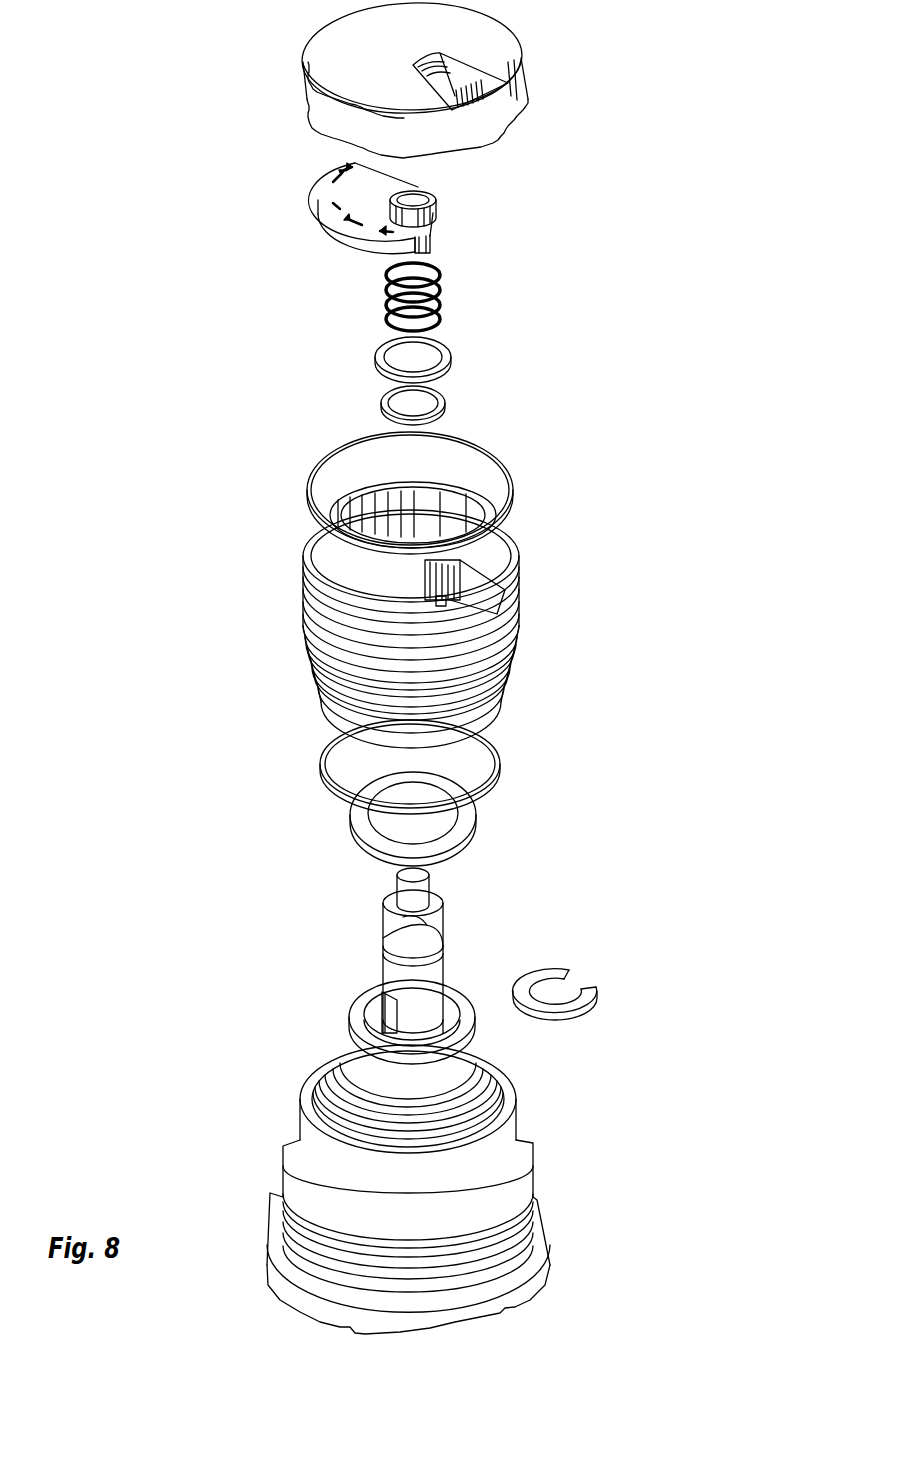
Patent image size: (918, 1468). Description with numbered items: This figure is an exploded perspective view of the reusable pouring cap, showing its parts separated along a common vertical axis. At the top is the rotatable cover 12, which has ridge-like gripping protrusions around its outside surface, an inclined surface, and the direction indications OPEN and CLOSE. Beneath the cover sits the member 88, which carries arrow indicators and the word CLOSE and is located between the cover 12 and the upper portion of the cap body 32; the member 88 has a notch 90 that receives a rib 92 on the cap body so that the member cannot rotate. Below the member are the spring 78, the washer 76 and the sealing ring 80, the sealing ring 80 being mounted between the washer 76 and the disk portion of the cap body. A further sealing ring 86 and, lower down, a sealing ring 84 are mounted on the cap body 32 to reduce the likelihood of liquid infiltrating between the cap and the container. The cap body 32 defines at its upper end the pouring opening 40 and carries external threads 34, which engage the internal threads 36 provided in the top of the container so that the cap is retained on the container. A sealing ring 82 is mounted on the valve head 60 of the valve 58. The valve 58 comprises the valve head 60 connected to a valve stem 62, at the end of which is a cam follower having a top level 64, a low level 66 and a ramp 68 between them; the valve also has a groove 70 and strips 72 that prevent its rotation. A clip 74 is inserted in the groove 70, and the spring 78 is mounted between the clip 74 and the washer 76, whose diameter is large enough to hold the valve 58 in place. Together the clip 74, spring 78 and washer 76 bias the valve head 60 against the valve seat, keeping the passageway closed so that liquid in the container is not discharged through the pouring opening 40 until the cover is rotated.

The cover 12 is at (475, 33).
The member 88 is at (433, 217).
The notch 90 is at (423, 257).
The spring 78 is at (437, 290).
The washer 76 is at (450, 355).
The sealing ring 80 is at (445, 403).
The sealing ring 86 is at (510, 485).
The pouring opening 40 is at (470, 575).
The rib 92 is at (441, 603).
The cap body 32 is at (497, 678).
The external threads 34 is at (470, 690).
The sealing ring 84 is at (497, 772).
The sealing ring 82 is at (465, 826).
The valve stem 62 is at (434, 926).
The low level 66 is at (392, 905).
The ramp 68 is at (383, 937).
The top level 64 is at (385, 940).
The groove 70 is at (443, 942).
The valve 58 is at (397, 975).
The strips 72 is at (385, 1014).
The valve head 60 is at (470, 1023).
The clip 74 is at (586, 985).
The internal threads 36 is at (467, 1094).